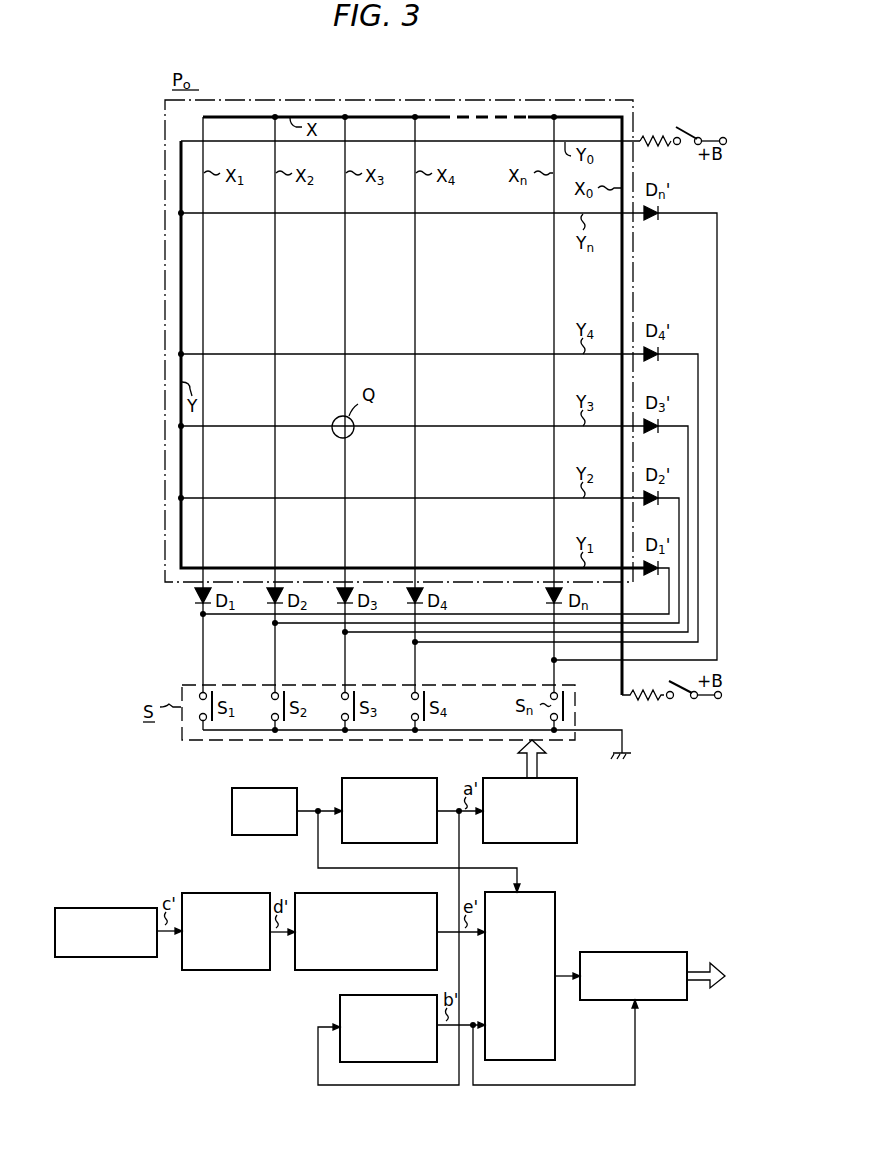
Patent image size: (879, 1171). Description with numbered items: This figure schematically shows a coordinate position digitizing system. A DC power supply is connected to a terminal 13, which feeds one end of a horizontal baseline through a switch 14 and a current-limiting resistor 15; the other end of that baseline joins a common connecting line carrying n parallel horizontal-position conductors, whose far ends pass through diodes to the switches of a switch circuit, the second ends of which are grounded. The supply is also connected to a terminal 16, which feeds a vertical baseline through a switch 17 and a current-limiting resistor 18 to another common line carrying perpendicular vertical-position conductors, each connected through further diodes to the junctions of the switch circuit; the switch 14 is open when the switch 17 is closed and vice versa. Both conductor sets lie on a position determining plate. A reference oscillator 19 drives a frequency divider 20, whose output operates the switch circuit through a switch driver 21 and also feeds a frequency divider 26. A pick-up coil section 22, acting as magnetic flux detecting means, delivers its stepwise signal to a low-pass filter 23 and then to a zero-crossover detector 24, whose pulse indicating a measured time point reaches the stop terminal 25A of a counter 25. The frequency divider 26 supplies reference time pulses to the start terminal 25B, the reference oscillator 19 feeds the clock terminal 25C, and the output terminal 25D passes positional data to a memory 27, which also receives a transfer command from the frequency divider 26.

The terminal 13 is at (718, 702).
The switch 14 is at (684, 702).
The current-limiting resistor 15 is at (644, 702).
The terminal 16 is at (715, 126).
The switch 17 is at (681, 126).
The current-limiting resistor 18 is at (644, 128).
The reference oscillator 19 is at (232, 811).
The frequency divider 20 is at (342, 805).
The switch driver 21 is at (578, 798).
The pick-up coil section 22 is at (107, 908).
The low-pass filter 23 is at (227, 893).
The zero-crossover detector 24 is at (307, 893).
The counter 25 is at (536, 976).
The stop terminal 25A is at (503, 934).
The start terminal 25B is at (502, 1028).
The clock terminal 25C is at (519, 904).
The output terminal 25D is at (534, 978).
The frequency divider 26 is at (340, 1012).
The memory 27 is at (628, 952).